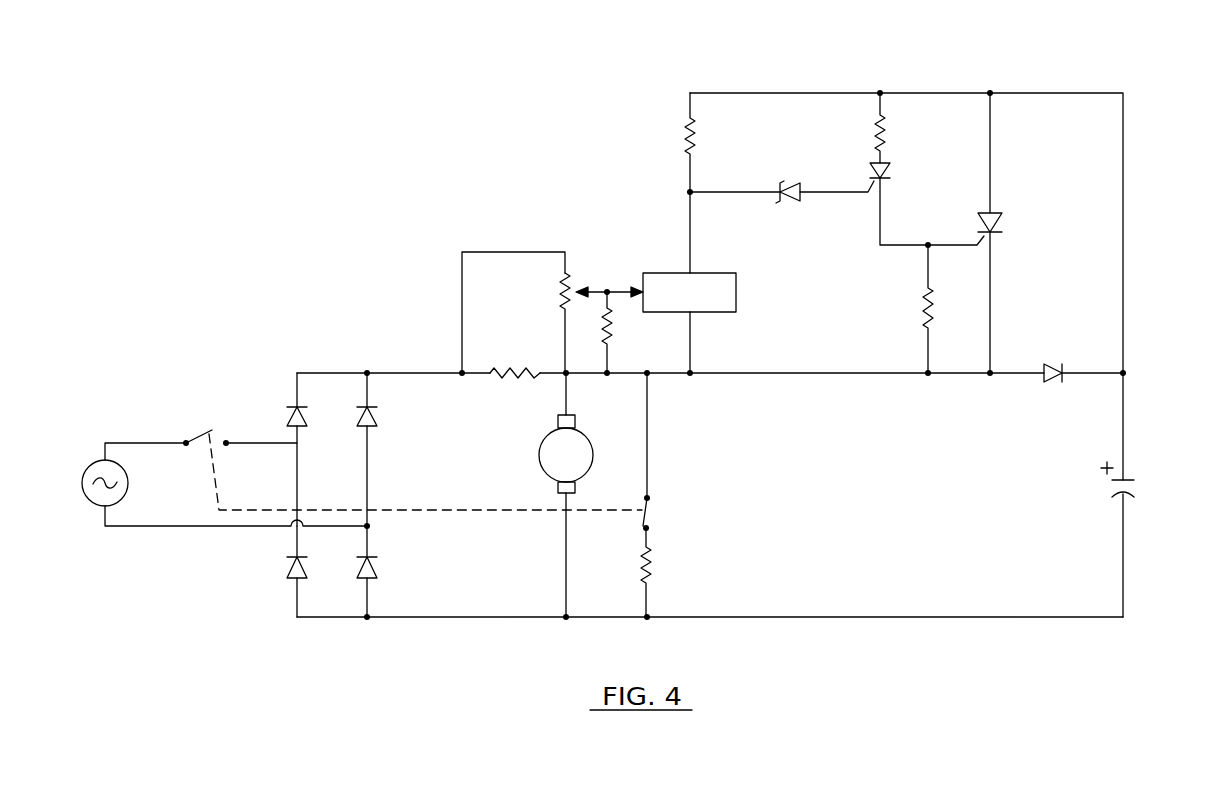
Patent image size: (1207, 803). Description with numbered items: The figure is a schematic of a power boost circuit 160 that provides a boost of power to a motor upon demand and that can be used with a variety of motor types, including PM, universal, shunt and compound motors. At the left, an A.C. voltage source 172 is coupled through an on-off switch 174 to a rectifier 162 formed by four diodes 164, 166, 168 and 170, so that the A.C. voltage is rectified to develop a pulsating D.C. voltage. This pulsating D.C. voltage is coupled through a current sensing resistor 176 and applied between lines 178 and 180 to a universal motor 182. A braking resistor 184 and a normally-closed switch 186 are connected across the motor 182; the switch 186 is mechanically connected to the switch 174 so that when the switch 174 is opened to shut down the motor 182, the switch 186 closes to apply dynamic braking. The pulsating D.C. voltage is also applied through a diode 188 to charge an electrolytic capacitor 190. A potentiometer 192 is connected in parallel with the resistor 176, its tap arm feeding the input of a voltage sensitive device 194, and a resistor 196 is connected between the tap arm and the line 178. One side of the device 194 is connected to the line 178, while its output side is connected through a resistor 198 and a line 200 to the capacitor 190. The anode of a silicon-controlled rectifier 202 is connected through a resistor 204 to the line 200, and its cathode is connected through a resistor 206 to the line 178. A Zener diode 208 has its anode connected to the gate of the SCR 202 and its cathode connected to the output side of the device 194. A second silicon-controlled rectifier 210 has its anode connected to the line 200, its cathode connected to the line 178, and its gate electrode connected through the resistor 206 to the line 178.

The power boost circuit 160 is at (465, 122).
The rectifier 162 is at (247, 637).
The diode 164 is at (283, 568).
The diode 166 is at (283, 405).
The diode 168 is at (380, 570).
The diode 170 is at (380, 418).
The A.C. voltage source 172 is at (95, 500).
The on-off switch 174 is at (198, 430).
The current sensing resistor 176 is at (515, 382).
The line 178 is at (815, 378).
The line 180 is at (888, 620).
The universal motor 182 is at (553, 463).
The braking resistor 184 is at (652, 570).
The normally-closed switch 186 is at (650, 504).
The diode 188 is at (1053, 385).
The electrolytic capacitor 190 is at (1130, 480).
The potentiometer 192 is at (572, 288).
The voltage sensitive device 194 is at (738, 300).
The resistor 196 is at (612, 325).
The resistor 198 is at (688, 148).
The line 200 is at (1060, 93).
The silicon-controlled rectifier 202 is at (868, 170).
The resistor 204 is at (886, 128).
The resistor 206 is at (925, 305).
The Zener diode 208 is at (796, 200).
The silicon-controlled rectifier 210 is at (1005, 225).